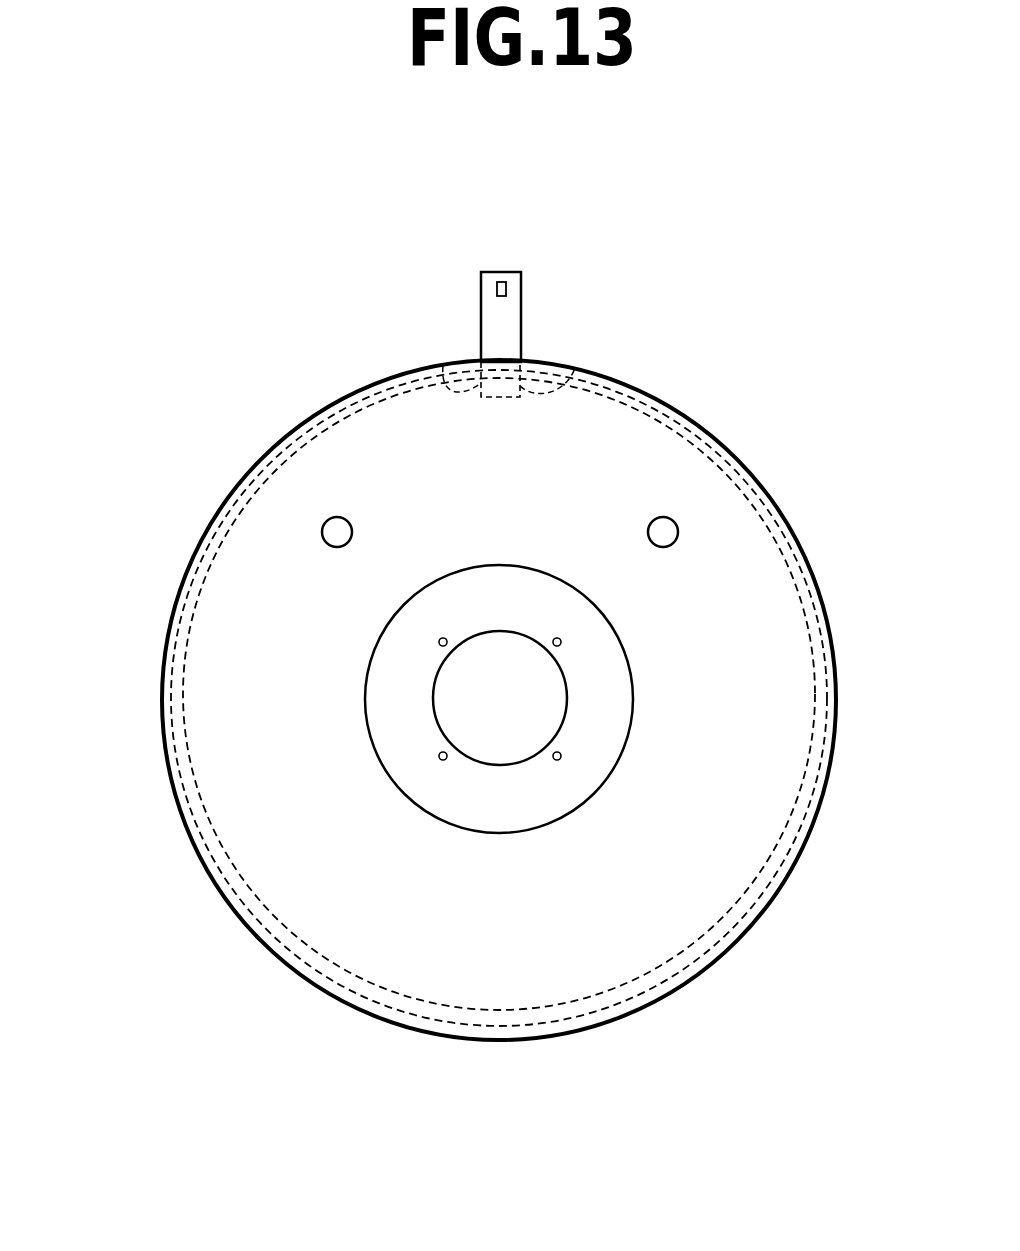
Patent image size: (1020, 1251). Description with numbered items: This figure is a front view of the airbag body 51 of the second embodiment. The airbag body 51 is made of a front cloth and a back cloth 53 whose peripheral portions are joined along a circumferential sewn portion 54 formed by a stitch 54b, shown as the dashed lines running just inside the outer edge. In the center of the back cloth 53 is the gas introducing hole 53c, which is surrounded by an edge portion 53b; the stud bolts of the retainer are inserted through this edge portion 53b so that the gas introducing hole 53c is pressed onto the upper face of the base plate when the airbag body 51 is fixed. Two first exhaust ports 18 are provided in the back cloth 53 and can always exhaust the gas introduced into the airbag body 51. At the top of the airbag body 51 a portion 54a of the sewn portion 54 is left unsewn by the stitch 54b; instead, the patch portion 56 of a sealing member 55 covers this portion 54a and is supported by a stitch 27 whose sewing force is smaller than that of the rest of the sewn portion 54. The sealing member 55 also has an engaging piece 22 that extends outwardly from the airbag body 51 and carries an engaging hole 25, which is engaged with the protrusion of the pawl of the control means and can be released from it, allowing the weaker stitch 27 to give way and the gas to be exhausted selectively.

The airbag body 51 is at (852, 614).
The back cloth 53 is at (607, 447).
The edge portion 53b is at (588, 777).
The gas introducing hole 53c is at (547, 660).
The sewn portion 54 is at (190, 593).
The portion of the sewn portion 54a is at (480, 357).
The stitch 54b is at (193, 833).
The sealing member 55 is at (542, 308).
The patch portion 56 is at (577, 368).
The first exhaust ports 18 is at (322, 523).
The engaging piece 22 is at (505, 272).
The engaging hole 25 is at (482, 285).
The stitch 27 is at (443, 366).